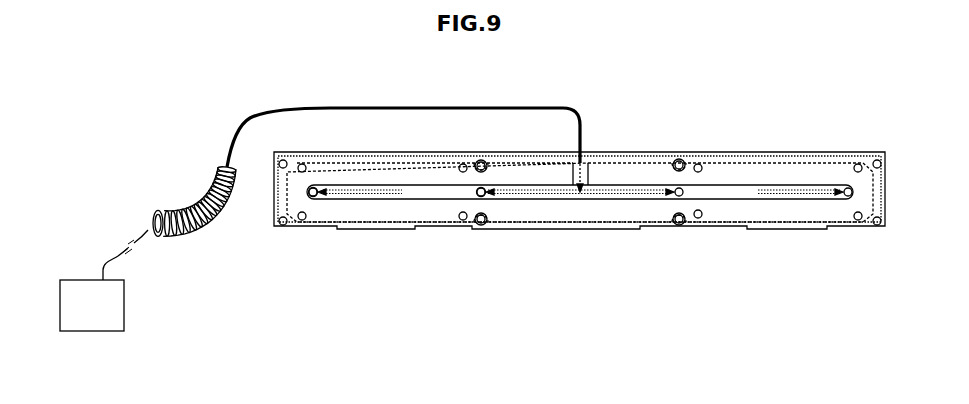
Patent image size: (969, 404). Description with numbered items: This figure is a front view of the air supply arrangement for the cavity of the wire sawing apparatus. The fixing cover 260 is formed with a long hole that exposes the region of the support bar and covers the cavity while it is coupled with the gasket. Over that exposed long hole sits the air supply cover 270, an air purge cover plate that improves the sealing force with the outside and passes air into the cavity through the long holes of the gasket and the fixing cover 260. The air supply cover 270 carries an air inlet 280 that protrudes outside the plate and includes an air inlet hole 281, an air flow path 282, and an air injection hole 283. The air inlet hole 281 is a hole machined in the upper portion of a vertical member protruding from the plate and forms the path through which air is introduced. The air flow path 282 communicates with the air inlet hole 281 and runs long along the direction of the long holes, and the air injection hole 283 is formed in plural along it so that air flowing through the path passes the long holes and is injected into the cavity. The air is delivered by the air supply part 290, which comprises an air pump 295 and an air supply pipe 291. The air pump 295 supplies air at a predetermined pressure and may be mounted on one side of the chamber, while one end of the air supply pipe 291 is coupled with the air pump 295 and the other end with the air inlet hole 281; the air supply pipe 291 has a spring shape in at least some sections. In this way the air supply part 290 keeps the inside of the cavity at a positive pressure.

The fixing cover 260 is at (754, 154).
The air supply cover 270 is at (822, 170).
The air inlet 280 is at (795, 200).
The air inlet hole 281 is at (588, 160).
The air flow path 282 is at (584, 200).
The air injection hole 283 is at (480, 198).
The air supply part 290 is at (159, 268).
The air supply pipe 291 is at (231, 207).
The air pump 295 is at (122, 305).